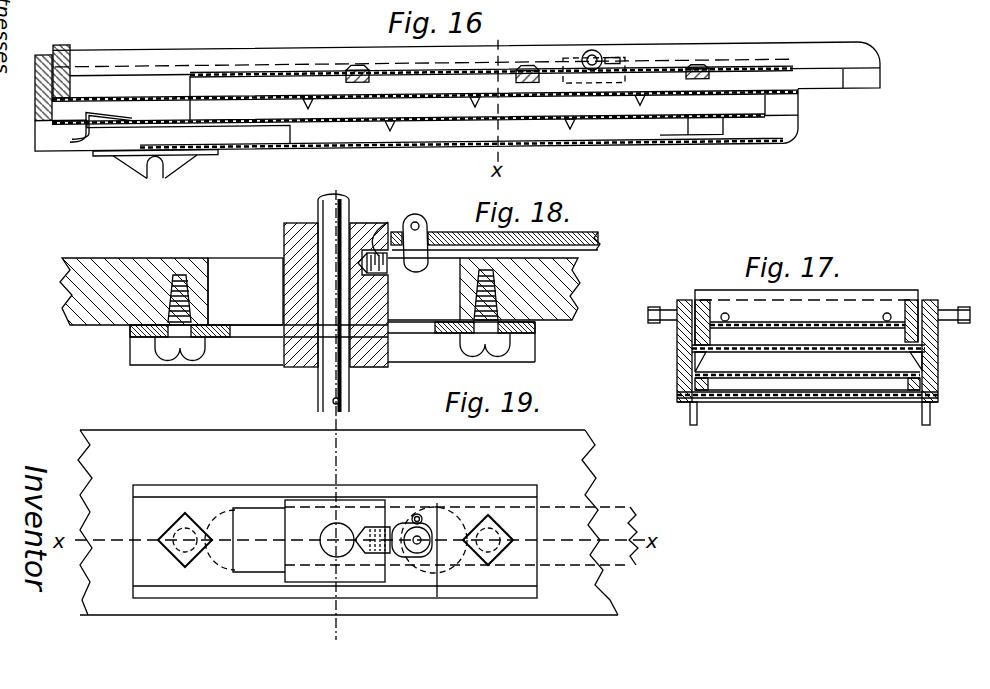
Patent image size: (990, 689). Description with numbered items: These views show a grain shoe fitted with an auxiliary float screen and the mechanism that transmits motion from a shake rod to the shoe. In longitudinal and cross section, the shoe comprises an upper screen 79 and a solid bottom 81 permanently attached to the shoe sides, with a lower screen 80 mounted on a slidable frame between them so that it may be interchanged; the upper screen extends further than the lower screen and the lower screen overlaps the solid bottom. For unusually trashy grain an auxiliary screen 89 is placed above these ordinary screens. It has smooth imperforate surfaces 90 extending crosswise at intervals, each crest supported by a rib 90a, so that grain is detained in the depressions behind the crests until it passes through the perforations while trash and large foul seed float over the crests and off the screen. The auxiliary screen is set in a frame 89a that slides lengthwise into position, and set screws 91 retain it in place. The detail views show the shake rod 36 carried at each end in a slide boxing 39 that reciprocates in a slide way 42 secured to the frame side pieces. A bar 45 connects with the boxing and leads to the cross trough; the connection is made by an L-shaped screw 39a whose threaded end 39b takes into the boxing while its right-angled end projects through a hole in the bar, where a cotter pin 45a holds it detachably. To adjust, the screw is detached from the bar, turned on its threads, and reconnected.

In FIG. 18, the shake rod 36 is at (319, 386).
In FIG. 19, the shake rod 36 is at (345, 533).
In FIG. 18, the slide boxing 39 is at (284, 357).
In FIG. 19, the slide boxing 39 is at (298, 505).
In FIG. 18, the L-shaped screw 39a is at (410, 267).
In FIG. 19, the L-shaped screw 39a is at (406, 549).
In FIG. 18, the threaded end 39b is at (390, 217).
In FIG. 19, the threaded end 39b is at (398, 527).
In FIG. 18, the slide way 42 is at (216, 362).
In FIG. 19, the slide way 42 is at (173, 510).
In FIG. 18, the bar 45 is at (470, 233).
In FIG. 19, the bar 45 is at (608, 512).
In FIG. 19, the cotter pin 45a is at (421, 516).
In FIG. 16, the upper screen 79 is at (631, 98).
In FIG. 17, the upper screen 79 is at (784, 346).
In FIG. 16, the lower screen 80 is at (362, 128).
In FIG. 17, the lower screen 80 is at (800, 380).
In FIG. 16, the solid bottom 81 is at (421, 152).
In FIG. 17, the solid bottom 81 is at (851, 400).
In FIG. 16, the auxiliary screen 89 is at (228, 77).
In FIG. 17, the auxiliary screen 89 is at (746, 330).
In FIG. 16, the frame 89a is at (741, 113).
In FIG. 17, the frame 89a is at (717, 289).
In FIG. 16, the imperforate surface 90 is at (365, 76).
In FIG. 16, the rib 90a is at (528, 47).
In FIG. 16, the set screw 91 is at (600, 62).
In FIG. 17, the set screw 91 is at (670, 310).